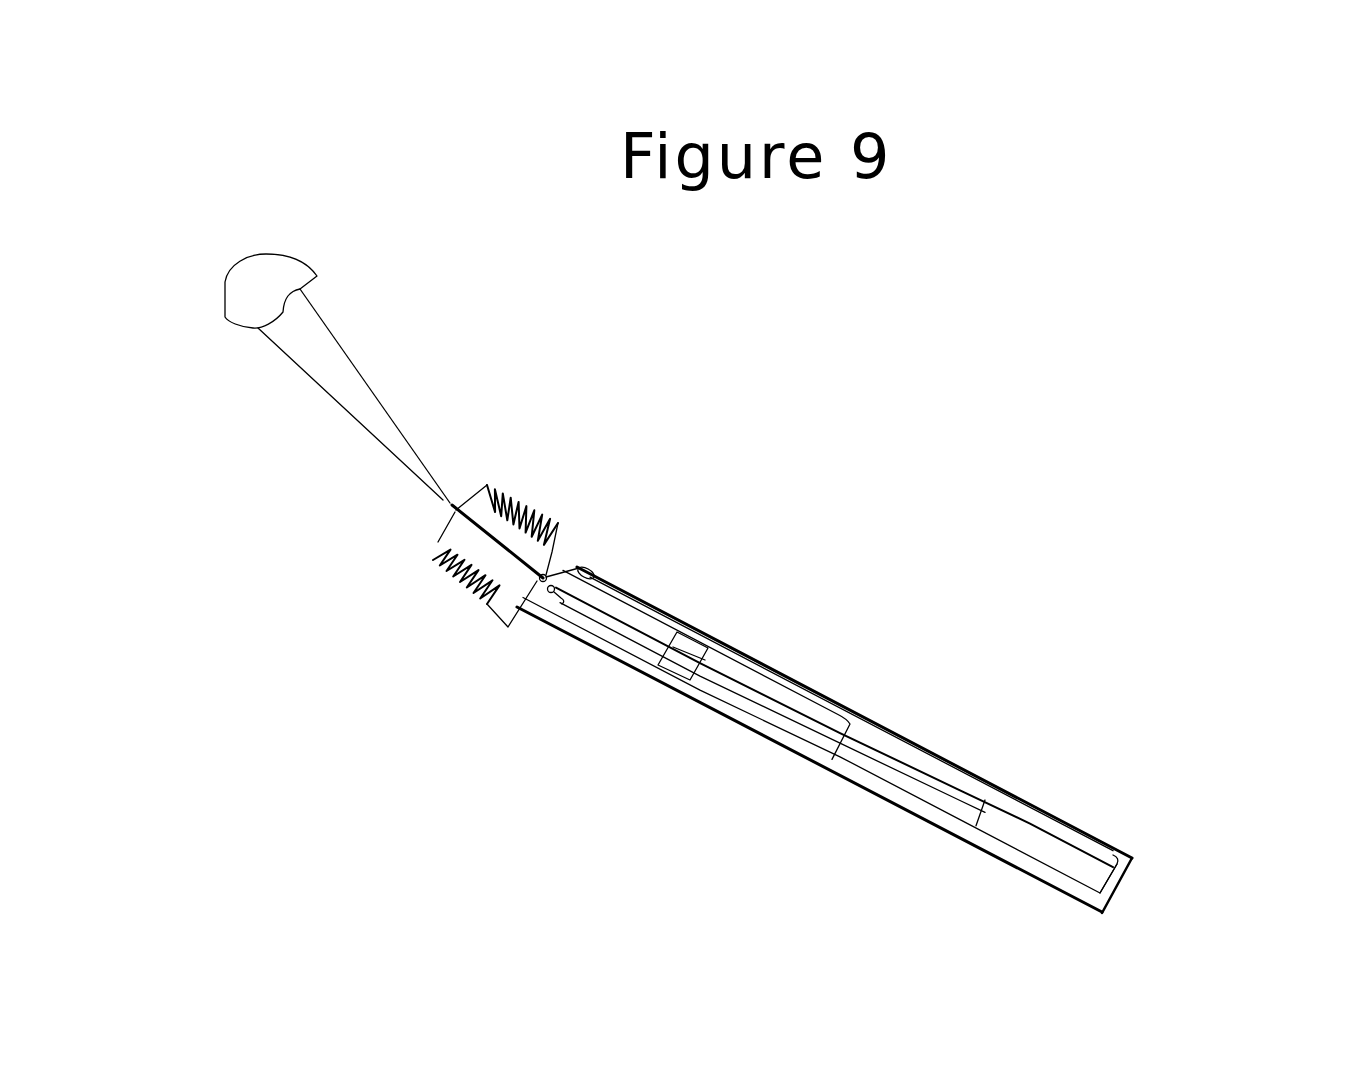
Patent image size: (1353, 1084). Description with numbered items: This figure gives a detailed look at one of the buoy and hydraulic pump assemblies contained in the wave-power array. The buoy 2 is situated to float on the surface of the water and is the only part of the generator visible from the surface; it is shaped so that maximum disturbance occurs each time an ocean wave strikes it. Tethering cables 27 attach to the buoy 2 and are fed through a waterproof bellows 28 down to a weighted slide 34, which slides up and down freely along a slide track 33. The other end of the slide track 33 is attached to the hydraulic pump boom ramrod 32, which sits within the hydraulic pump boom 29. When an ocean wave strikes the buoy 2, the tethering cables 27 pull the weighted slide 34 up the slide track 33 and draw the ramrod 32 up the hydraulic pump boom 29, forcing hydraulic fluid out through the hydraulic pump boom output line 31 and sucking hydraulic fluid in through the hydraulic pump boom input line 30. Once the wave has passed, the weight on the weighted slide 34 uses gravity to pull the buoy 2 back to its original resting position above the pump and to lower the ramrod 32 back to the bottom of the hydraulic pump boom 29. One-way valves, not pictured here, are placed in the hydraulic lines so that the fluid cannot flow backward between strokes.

The buoy 2 is at (210, 326).
The tethering cables 27 is at (326, 407).
The waterproof bellows 28 is at (578, 506).
The hydraulic pump boom 29 is at (992, 822).
The hydraulic pump boom input line 30 is at (597, 565).
The hydraulic pump boom output line 31 is at (554, 553).
The hydraulic pump boom ramrod 32 is at (923, 787).
The slide track 33 is at (780, 727).
The weighted slide 34 is at (675, 667).